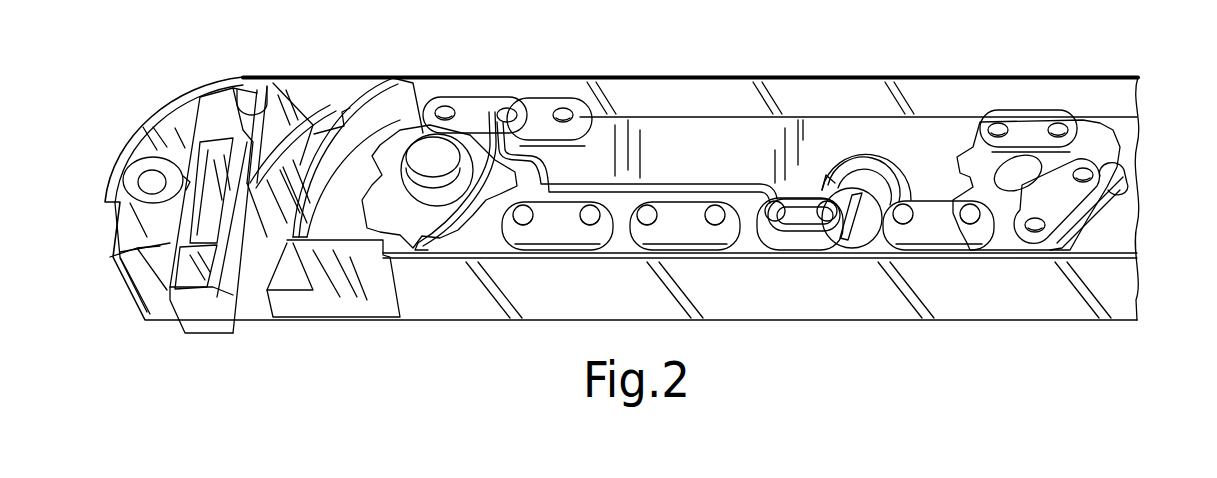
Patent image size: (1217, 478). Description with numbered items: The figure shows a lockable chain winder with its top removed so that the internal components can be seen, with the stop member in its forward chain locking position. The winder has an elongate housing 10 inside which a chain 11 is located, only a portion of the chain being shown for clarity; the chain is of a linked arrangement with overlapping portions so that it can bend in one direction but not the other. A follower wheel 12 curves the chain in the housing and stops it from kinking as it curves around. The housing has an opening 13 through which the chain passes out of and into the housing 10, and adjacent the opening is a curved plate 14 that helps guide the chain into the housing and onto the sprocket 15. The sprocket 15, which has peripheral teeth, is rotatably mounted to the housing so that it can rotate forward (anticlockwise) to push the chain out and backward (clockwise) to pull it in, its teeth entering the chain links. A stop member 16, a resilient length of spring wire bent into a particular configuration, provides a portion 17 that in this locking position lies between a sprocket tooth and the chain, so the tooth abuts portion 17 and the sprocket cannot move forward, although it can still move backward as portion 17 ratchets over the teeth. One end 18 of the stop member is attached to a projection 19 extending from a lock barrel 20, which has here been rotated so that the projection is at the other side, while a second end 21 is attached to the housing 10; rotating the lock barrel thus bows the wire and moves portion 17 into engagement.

The housing 10 is at (763, 76).
The chain 11 is at (476, 95).
The follower wheel 12 is at (968, 160).
The opening 13 is at (270, 332).
The curved plate 14 is at (310, 88).
The sprocket 15 is at (393, 88).
The stop member 16 is at (694, 183).
The portion 17 is at (545, 112).
The end 18 is at (826, 190).
The projection 19 is at (850, 228).
The lock barrel 20 is at (872, 232).
The second end 21 is at (418, 250).